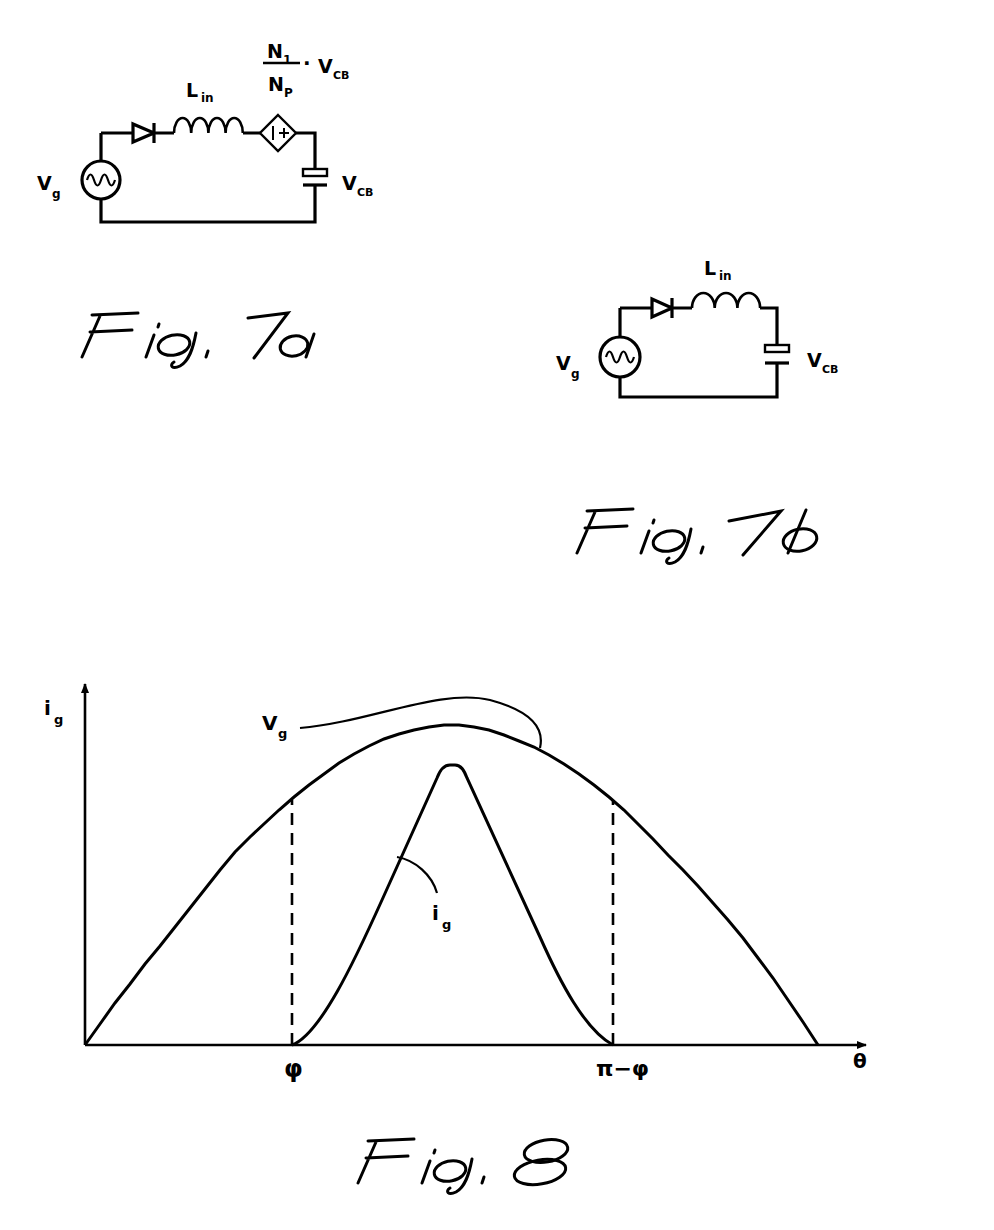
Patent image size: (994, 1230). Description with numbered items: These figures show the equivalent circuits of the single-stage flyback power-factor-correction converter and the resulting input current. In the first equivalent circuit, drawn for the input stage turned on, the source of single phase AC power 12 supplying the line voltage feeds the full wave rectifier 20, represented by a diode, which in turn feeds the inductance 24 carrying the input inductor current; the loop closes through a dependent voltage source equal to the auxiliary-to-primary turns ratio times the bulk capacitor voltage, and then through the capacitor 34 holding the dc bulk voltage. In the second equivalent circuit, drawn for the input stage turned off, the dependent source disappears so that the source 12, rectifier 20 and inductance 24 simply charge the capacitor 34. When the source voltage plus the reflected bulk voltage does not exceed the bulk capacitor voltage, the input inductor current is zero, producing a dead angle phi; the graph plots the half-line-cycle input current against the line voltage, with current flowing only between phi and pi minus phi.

In FIG. 7A, the source of single phase AC power 12 is at (90, 199).
In FIG. 7B, the source of single phase AC power 12 is at (607, 377).
In FIG. 7A, the full wave rectifier 20 is at (147, 121).
In FIG. 7B, the full wave rectifier 20 is at (658, 297).
In FIG. 7A, the inductance 24 is at (178, 120).
In FIG. 7B, the inductance 24 is at (700, 293).
In FIG. 7A, the capacitor 34 is at (330, 182).
In FIG. 7B, the capacitor 34 is at (787, 362).